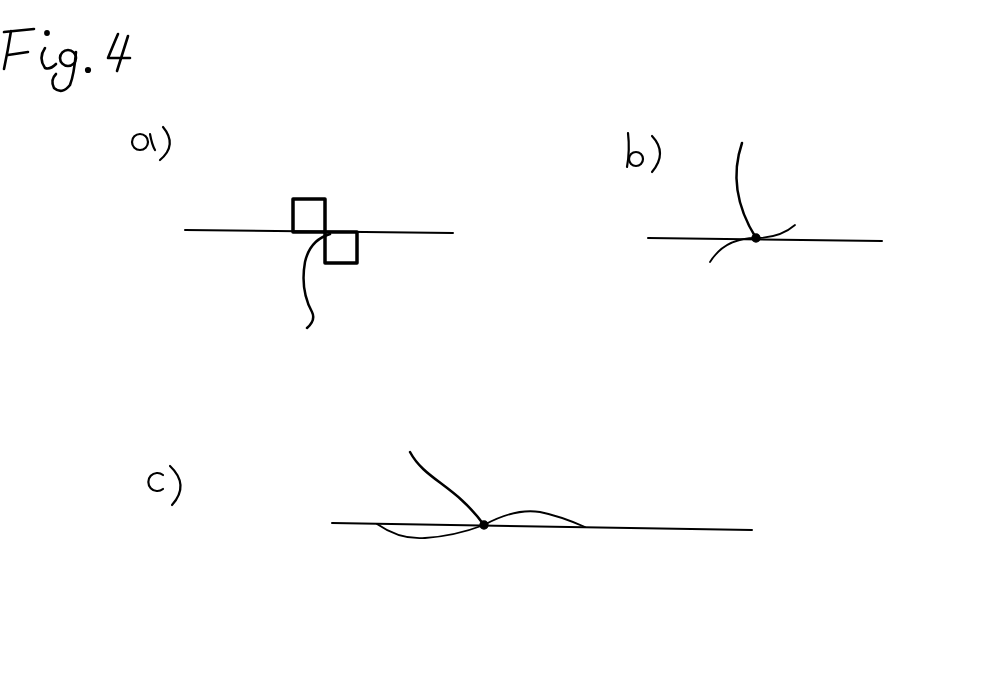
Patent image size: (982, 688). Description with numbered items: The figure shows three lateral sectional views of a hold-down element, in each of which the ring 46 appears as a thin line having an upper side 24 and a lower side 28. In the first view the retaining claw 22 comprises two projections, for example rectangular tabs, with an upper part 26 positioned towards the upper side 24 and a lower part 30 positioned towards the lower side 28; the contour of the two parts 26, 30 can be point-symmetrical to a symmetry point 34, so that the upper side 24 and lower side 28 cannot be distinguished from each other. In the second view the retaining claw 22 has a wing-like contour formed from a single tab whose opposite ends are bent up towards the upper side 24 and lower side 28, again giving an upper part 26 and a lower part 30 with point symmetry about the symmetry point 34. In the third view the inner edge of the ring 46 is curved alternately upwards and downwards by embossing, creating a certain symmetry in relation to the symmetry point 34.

In FIG. 4a, the retaining claw 22 is at (358, 196).
In FIG. 4b, the retaining claw 22 is at (766, 256).
In FIG. 4a, the upper side 24 is at (218, 222).
In FIG. 4b, the upper side 24 is at (675, 232).
In FIG. 4c, the upper side 24 is at (712, 527).
In FIG. 4a, the upper part 26 is at (310, 198).
In FIG. 4b, the upper part 26 is at (792, 220).
In FIG. 4c, the upper part 26 is at (537, 510).
In FIG. 4a, the lower side 28 is at (245, 240).
In FIG. 4b, the lower side 28 is at (655, 242).
In FIG. 4c, the lower side 28 is at (732, 534).
In FIG. 4a, the lower part 30 is at (340, 265).
In FIG. 4b, the lower part 30 is at (725, 248).
In FIG. 4c, the lower part 30 is at (430, 547).
In FIG. 4a, the symmetry point 34 is at (304, 311).
In FIG. 4b, the symmetry point 34 is at (749, 165).
In FIG. 4c, the symmetry point 34 is at (430, 467).
In FIG. 4a, the ring 46 is at (174, 231).
In FIG. 4b, the ring 46 is at (897, 241).
In FIG. 4c, the ring 46 is at (760, 530).